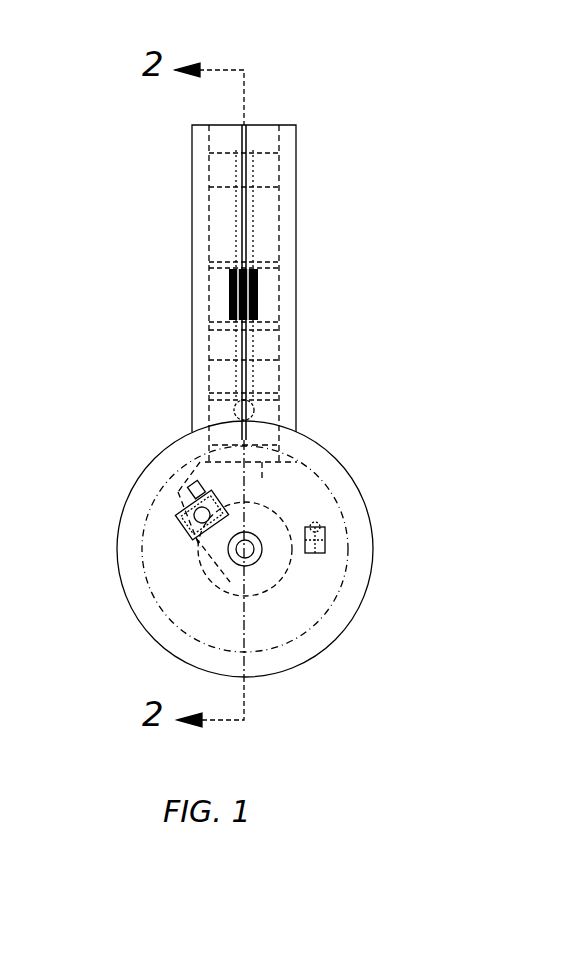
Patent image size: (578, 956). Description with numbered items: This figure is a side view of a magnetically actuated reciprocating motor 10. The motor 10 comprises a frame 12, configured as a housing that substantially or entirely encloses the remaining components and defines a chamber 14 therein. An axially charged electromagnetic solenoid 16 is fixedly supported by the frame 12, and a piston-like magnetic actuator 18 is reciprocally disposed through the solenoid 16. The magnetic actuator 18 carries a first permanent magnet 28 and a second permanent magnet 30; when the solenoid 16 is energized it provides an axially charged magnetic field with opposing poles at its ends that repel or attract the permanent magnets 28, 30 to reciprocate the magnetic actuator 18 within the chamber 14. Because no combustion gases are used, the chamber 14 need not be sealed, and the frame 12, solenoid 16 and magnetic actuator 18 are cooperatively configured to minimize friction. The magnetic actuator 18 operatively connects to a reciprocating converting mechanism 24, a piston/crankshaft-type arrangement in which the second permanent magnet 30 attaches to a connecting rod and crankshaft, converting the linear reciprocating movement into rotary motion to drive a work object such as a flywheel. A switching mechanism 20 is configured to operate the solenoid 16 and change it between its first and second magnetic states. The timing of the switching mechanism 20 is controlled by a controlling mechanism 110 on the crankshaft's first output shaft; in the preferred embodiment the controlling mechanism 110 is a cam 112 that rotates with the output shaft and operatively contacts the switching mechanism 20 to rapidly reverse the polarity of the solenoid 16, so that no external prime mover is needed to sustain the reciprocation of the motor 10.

The magnetically actuated reciprocating motor 10 is at (325, 226).
The frame 12 is at (200, 295).
The chamber 14 is at (265, 348).
The electromagnetic solenoid 16 is at (262, 302).
The magnetic actuator 18 is at (235, 232).
The switching mechanism 20 is at (310, 562).
The reciprocating converting mechanism 24 is at (183, 533).
The first permanent magnet 28 is at (265, 170).
The second permanent magnet 30 is at (220, 381).
The controlling mechanism 110 is at (283, 508).
The cam 112 is at (213, 562).